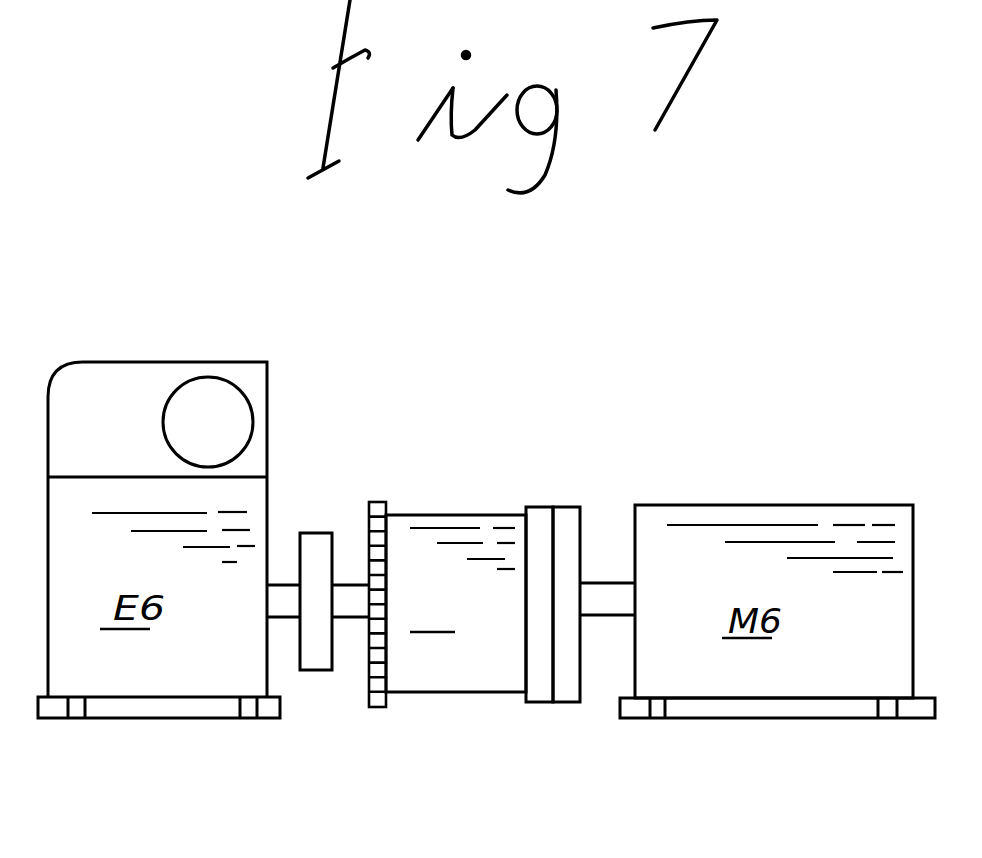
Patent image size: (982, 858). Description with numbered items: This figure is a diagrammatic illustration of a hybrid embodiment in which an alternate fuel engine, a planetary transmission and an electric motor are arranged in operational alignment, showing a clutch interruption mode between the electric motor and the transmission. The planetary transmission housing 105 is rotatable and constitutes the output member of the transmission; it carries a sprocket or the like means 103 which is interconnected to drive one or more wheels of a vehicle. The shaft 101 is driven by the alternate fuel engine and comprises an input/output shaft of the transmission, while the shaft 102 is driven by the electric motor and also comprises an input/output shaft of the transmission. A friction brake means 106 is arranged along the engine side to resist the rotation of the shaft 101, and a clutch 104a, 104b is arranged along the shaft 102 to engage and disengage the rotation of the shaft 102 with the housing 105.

The shaft 101 is at (350, 590).
The shaft 102 is at (605, 592).
The sprocket 103 is at (379, 707).
The clutch 104a is at (537, 515).
The clutch 104b is at (562, 695).
The planetary transmission housing 105 is at (422, 523).
The friction brake means 106 is at (318, 665).